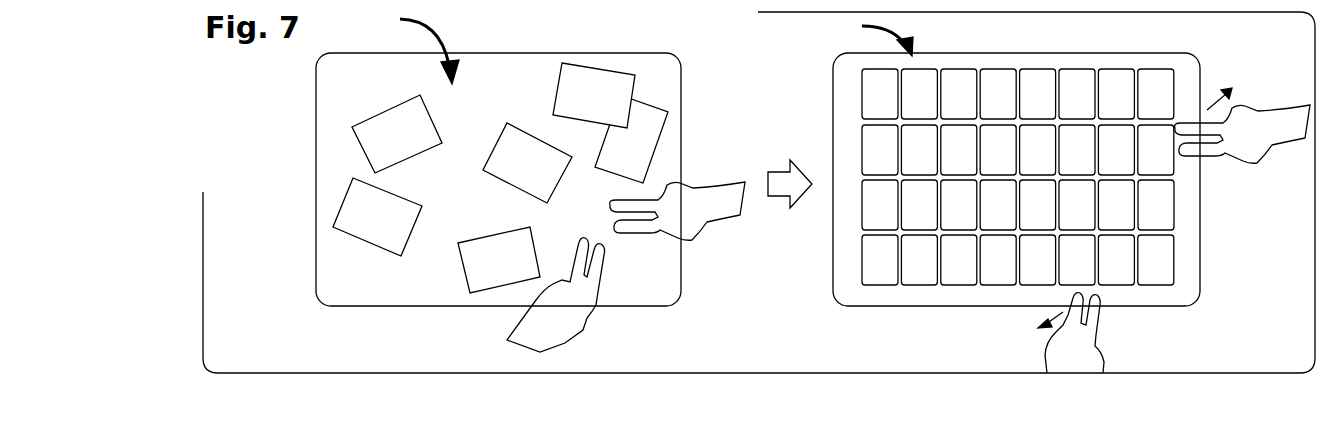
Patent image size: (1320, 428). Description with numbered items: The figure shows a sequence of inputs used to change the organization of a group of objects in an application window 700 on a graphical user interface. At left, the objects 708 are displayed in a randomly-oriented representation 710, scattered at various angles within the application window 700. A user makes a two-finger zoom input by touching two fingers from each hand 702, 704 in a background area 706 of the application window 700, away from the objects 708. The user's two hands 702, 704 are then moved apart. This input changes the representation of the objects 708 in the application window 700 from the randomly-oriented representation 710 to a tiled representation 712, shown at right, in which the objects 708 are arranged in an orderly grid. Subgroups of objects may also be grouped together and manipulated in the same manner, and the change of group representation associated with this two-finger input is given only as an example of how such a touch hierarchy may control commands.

The application window 700 is at (617, 53).
The hand 702 is at (705, 200).
The hand 704 is at (550, 320).
The background area 706 is at (594, 230).
The objects 708 is at (608, 92).
The randomly-oriented representation 710 is at (407, 46).
The tiled representation 712 is at (869, 37).